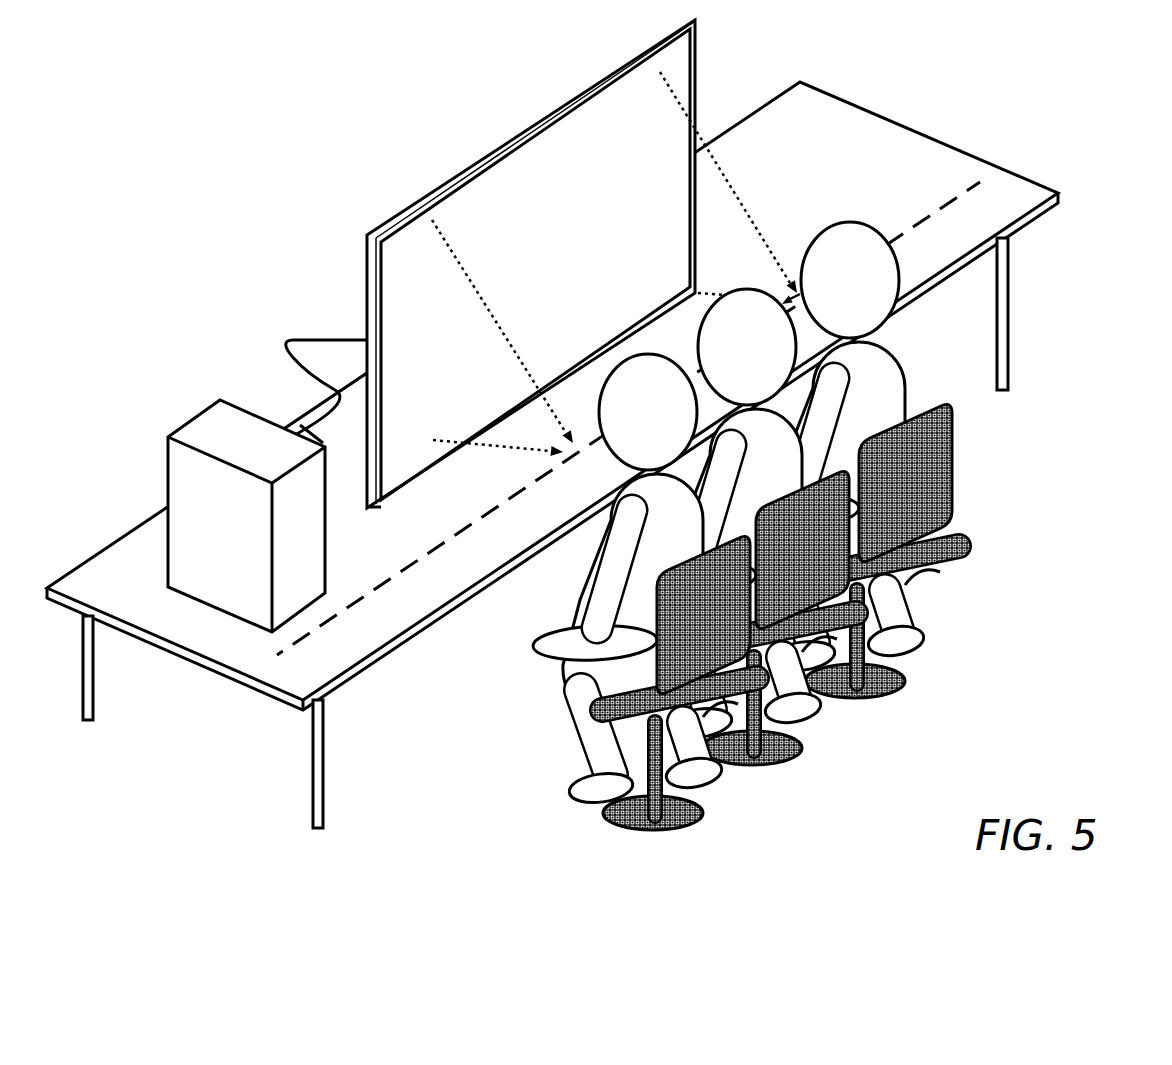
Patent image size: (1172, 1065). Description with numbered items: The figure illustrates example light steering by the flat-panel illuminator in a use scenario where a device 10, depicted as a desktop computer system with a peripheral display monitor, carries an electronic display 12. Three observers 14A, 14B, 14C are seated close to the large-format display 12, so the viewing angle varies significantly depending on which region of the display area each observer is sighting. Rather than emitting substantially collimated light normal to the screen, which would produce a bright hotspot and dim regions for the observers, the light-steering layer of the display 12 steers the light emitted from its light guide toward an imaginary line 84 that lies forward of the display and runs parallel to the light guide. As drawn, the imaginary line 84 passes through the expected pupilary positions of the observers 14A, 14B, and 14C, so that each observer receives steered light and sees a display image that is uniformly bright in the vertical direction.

The device 10 is at (248, 362).
The electronic display 12 is at (422, 275).
The observer 14A is at (798, 462).
The observer 14B is at (694, 527).
The observer 14C is at (894, 397).
The imaginary line 84 is at (628, 418).